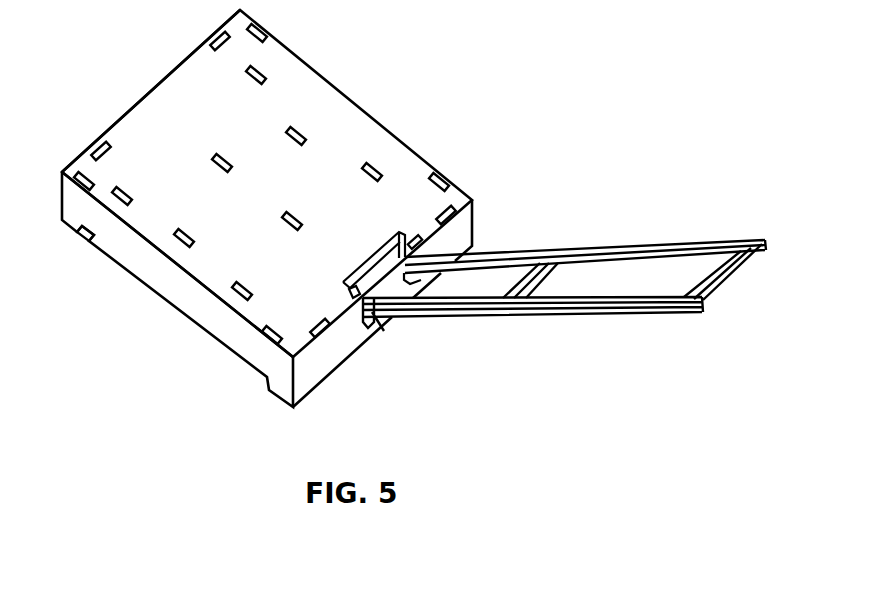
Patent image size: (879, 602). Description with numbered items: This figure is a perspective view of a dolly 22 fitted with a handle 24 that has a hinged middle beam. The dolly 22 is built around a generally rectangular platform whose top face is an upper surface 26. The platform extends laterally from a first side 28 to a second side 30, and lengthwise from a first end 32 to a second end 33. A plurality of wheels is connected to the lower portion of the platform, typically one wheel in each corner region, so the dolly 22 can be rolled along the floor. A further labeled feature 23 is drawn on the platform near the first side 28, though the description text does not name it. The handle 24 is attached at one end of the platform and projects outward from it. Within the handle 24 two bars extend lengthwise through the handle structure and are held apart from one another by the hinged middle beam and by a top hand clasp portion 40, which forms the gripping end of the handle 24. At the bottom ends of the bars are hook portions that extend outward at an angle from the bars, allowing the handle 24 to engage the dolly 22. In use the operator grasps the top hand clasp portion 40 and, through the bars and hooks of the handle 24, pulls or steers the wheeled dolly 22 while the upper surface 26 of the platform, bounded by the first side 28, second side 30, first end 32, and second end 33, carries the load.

The dolly 22 is at (232, 320).
The tab 23 is at (167, 183).
The handle 24 is at (575, 310).
The upper surface 26 is at (318, 273).
The first side 28 is at (183, 264).
The second side 30 is at (312, 63).
The first end 32 is at (327, 335).
The second end 33 is at (112, 121).
The top hand clasp portion 40 is at (727, 275).